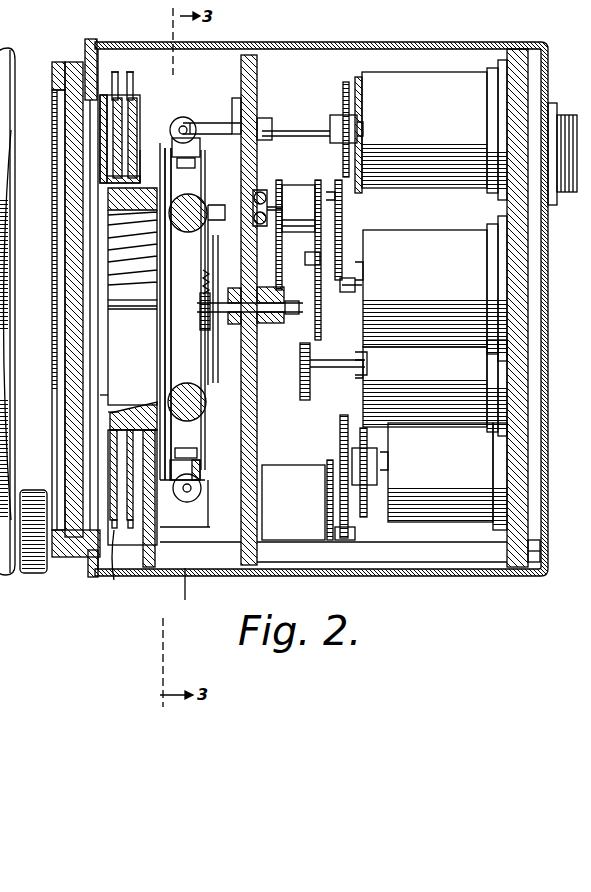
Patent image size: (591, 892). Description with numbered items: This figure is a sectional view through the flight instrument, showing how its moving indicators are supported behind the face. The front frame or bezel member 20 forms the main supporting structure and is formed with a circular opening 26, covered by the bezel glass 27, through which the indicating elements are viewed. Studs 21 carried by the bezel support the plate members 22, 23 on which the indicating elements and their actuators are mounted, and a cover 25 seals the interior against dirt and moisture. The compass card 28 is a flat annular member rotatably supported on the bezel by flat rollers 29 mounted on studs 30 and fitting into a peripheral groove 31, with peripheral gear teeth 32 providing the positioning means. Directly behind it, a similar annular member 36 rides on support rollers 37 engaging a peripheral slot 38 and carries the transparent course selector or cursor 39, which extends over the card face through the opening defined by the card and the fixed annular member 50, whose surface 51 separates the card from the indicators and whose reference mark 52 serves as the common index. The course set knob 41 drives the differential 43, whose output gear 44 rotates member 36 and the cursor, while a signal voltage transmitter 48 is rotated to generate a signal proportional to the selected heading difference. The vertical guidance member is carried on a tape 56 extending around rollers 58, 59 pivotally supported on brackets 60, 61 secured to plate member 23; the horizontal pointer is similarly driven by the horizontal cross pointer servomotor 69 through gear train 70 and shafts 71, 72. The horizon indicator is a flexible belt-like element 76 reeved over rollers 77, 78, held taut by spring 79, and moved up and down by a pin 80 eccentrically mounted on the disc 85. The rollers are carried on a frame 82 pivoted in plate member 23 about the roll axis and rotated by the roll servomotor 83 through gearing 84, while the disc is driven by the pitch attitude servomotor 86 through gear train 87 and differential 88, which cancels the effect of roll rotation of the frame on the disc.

The front frame or bezel member 20 is at (90, 578).
The studs 21 is at (218, 566).
The plate member 22 is at (186, 600).
The plate member 23 is at (251, 566).
The cover 25 is at (390, 42).
The circular opening 26 is at (62, 125).
The bezel glass 27 is at (522, 566).
The compass card 28 is at (110, 470).
The flat rollers 29 is at (114, 72).
The studs 30 is at (86, 58).
The groove 31 is at (112, 580).
The peripheral gear teeth 32 is at (131, 532).
The annular member 36 is at (140, 112).
The support rollers 37 is at (130, 72).
The peripheral slot 38 is at (162, 527).
The course selector member or cursor 39 is at (74, 154).
The course set knob 41 is at (36, 575).
The differential 43 is at (280, 465).
The gear 44 is at (118, 530).
The signal voltage transmitter 48 is at (436, 506).
The fixed annular member or ring 50 is at (100, 395).
The surface 51 is at (110, 412).
The reference mark 52 is at (110, 215).
The tape or band 56 is at (170, 134).
The roller 58 is at (196, 168).
The roller 59 is at (197, 457).
The bracket 60 is at (234, 104).
The bracket 61 is at (212, 498).
The horizontal cross pointer servomotor 69 is at (440, 76).
The gear train 70 is at (344, 84).
The shaft 71 is at (188, 120).
The shaft 72 is at (294, 130).
The flexible belt-like element 76 is at (160, 366).
The roller 77 is at (197, 195).
The roller 78 is at (198, 425).
The spring 79 is at (203, 282).
The pin 80 is at (201, 312).
The frame 82 is at (266, 190).
The roll servomotor 83 is at (431, 388).
The gearing 84 is at (313, 374).
The disc 85 is at (208, 248).
The pitch attitude servomotor 86 is at (432, 232).
The gear train 87 is at (342, 220).
The differential 88 is at (300, 185).